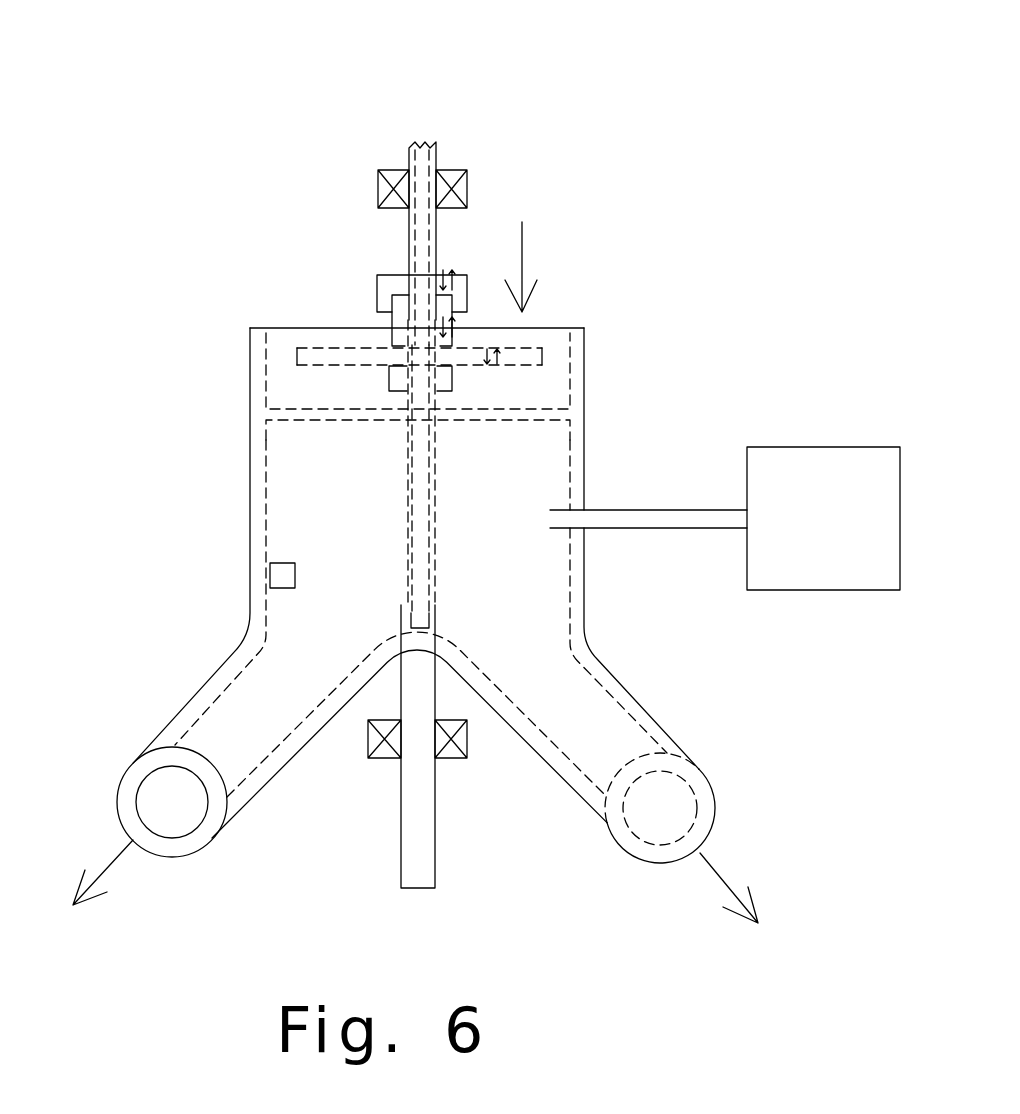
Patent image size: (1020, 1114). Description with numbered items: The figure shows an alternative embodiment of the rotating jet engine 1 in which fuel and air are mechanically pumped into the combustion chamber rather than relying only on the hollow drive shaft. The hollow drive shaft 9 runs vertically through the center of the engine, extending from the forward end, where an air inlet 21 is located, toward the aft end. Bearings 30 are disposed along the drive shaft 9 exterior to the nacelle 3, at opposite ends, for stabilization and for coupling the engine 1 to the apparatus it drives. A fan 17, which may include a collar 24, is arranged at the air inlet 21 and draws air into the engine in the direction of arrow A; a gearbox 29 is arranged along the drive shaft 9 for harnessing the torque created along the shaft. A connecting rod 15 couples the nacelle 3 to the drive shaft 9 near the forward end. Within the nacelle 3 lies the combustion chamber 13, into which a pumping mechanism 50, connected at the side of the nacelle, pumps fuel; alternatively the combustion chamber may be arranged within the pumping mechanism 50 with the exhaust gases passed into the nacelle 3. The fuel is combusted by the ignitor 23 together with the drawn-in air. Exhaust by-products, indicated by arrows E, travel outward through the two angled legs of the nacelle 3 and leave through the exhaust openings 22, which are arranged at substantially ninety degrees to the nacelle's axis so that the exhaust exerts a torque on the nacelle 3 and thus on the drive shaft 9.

The rotating jet engine 1 is at (155, 87).
The nacelle 3 is at (583, 580).
The hollow drive shaft 9 is at (420, 248).
The combustion chamber 13 is at (520, 553).
The connecting rod 15 is at (347, 413).
The fan 17 is at (297, 365).
The air inlet 21 is at (540, 326).
The exhaust openings 22 is at (172, 803).
The ignitor 23 is at (270, 580).
The collar 24 is at (453, 383).
The gearbox 29 is at (388, 287).
The bearings 30 is at (380, 193).
The pumping mechanism 50 is at (837, 542).